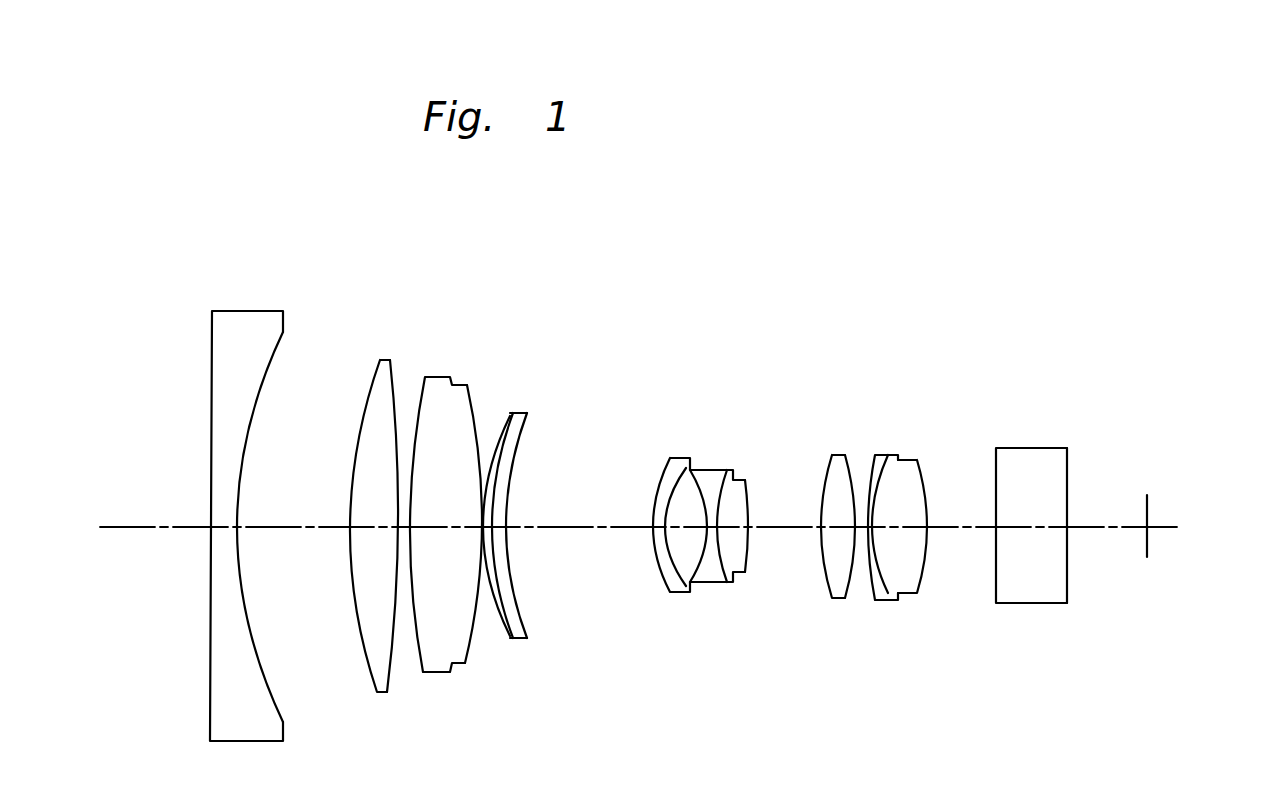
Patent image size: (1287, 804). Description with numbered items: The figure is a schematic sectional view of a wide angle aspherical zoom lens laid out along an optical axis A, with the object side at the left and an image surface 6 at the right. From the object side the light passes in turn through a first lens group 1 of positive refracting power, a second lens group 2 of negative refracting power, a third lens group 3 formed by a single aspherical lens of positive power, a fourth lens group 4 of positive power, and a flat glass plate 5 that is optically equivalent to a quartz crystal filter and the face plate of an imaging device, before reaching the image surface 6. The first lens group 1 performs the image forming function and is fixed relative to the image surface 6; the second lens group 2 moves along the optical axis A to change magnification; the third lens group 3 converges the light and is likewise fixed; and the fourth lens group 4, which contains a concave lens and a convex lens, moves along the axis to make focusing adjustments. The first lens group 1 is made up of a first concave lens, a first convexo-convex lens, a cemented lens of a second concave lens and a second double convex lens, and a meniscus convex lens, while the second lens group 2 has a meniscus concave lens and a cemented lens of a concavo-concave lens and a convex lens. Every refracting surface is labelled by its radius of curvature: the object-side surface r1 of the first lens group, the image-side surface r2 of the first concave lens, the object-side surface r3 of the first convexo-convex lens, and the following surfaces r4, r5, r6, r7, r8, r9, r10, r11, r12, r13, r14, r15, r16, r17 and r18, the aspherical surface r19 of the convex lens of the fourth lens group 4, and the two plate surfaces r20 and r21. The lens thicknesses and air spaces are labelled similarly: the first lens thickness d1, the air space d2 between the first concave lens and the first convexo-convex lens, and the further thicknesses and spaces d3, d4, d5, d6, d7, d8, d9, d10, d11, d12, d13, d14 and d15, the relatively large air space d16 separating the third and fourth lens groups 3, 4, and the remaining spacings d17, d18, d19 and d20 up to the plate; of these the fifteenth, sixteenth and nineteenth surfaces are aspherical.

The first lens group 1 is at (193, 273).
The second lens group 2 is at (632, 355).
The third lens group 3 is at (792, 361).
The fourth lens group 4 is at (865, 361).
The flat glass plate 5 is at (995, 380).
The image surface 6 is at (1144, 493).
The optical axis A is at (1168, 527).
The surface r1 of the first lens group r1 is at (212, 611).
The image-side surface of the first concave lens r2 is at (250, 648).
The object-side surface of the first convexo-convex lens r3 is at (350, 560).
The lens surface r4 is at (395, 570).
The lens surface r5 is at (402, 617).
The lens surface r6 is at (428, 635).
The lens surface r7 is at (468, 633).
The lens surface r8 is at (513, 636).
The lens surface r9 is at (530, 636).
The lens surface r10 is at (654, 549).
The lens surface r11 is at (670, 565).
The lens surface r12 is at (683, 583).
The lens surface r13 is at (721, 577).
The lens surface r14 is at (743, 567).
The lens surface r15 is at (822, 555).
The lens surface r16 is at (829, 600).
The lens surface r17 is at (867, 580).
The lens surface r18 is at (888, 594).
The aspherical surface r19 is at (920, 577).
The plate surface r20 is at (991, 583).
The plate surface r21 is at (1062, 598).
The axial thickness/spacing d1 is at (218, 525).
The air space d2 is at (302, 524).
The axial thickness/spacing d3 is at (366, 524).
The axial thickness/spacing d4 is at (390, 522).
The axial thickness/spacing d5 is at (402, 524).
The axial thickness/spacing d6 is at (419, 533).
The axial thickness/spacing d7 is at (484, 525).
The axial thickness/spacing d8 is at (492, 522).
The axial thickness/spacing d9 is at (547, 527).
The axial thickness/spacing d10 is at (657, 522).
The axial thickness/spacing d11 is at (674, 520).
The axial thickness/spacing d12 is at (716, 522).
The axial thickness/spacing d13 is at (736, 523).
The axial thickness/spacing d14 is at (765, 525).
The axial thickness/spacing d15 is at (842, 525).
The air space d16 is at (865, 525).
The axial thickness/spacing d17 is at (876, 522).
The axial thickness/spacing d18 is at (903, 525).
The axial thickness/spacing d19 is at (938, 525).
The axial thickness/spacing d20 is at (1013, 525).